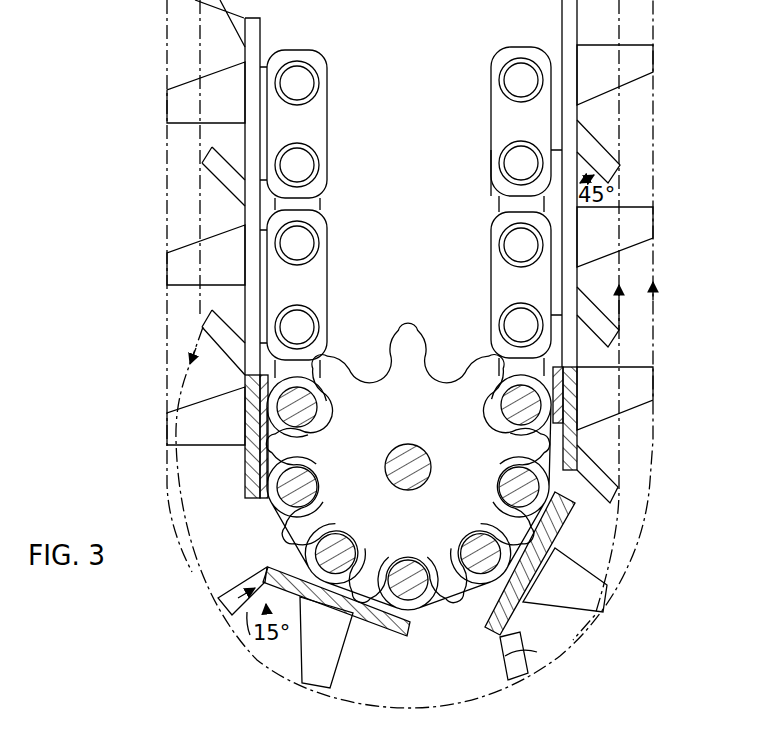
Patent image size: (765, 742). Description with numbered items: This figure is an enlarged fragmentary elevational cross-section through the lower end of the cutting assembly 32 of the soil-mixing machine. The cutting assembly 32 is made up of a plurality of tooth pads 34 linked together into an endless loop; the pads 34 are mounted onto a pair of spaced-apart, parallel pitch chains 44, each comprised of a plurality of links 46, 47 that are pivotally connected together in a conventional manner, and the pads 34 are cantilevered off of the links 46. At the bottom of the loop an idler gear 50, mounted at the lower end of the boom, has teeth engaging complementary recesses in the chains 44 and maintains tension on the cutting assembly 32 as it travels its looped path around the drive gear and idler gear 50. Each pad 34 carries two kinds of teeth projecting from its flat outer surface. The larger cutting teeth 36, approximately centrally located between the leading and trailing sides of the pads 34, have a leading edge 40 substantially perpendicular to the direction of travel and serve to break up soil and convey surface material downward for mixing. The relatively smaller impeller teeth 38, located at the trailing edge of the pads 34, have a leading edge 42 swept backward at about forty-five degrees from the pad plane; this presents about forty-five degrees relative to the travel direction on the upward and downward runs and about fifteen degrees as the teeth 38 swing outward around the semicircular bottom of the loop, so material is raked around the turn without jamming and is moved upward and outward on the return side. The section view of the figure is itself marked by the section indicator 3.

The frame rail 3 is at (580, 183).
The cutting assembly 32 is at (626, 598).
The tooth pads 34 is at (250, 503).
The cutting teeth 36 is at (313, 687).
The impeller teeth 38 is at (230, 607).
The leading edge 40 is at (590, 578).
The leading edge 42 is at (247, 640).
The pitch chains 44 is at (488, 232).
The link 46 is at (497, 90).
The link 47 is at (498, 197).
The idler gear 50 is at (383, 380).